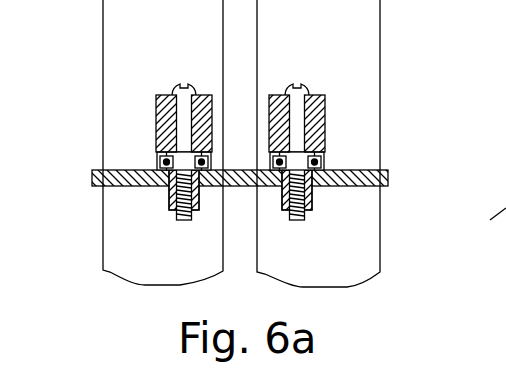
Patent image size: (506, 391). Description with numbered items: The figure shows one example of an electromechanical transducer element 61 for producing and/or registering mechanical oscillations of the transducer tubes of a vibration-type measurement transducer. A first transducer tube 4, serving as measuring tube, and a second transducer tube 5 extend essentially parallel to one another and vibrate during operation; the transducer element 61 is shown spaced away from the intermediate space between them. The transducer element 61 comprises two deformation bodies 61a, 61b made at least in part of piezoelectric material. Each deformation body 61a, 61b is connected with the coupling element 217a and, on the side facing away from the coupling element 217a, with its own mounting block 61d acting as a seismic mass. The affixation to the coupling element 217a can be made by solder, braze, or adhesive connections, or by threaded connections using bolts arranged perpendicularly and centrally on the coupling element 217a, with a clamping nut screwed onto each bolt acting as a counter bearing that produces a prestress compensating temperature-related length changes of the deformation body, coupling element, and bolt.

The first transducer tube 4 is at (128, 29).
The second transducer tube 5 is at (366, 22).
The transducer element 61 is at (267, 155).
The deformation body 61a is at (160, 162).
The deformation body 61b is at (321, 161).
The mounting block 61d is at (206, 94).
The first coupling element 217a is at (388, 179).